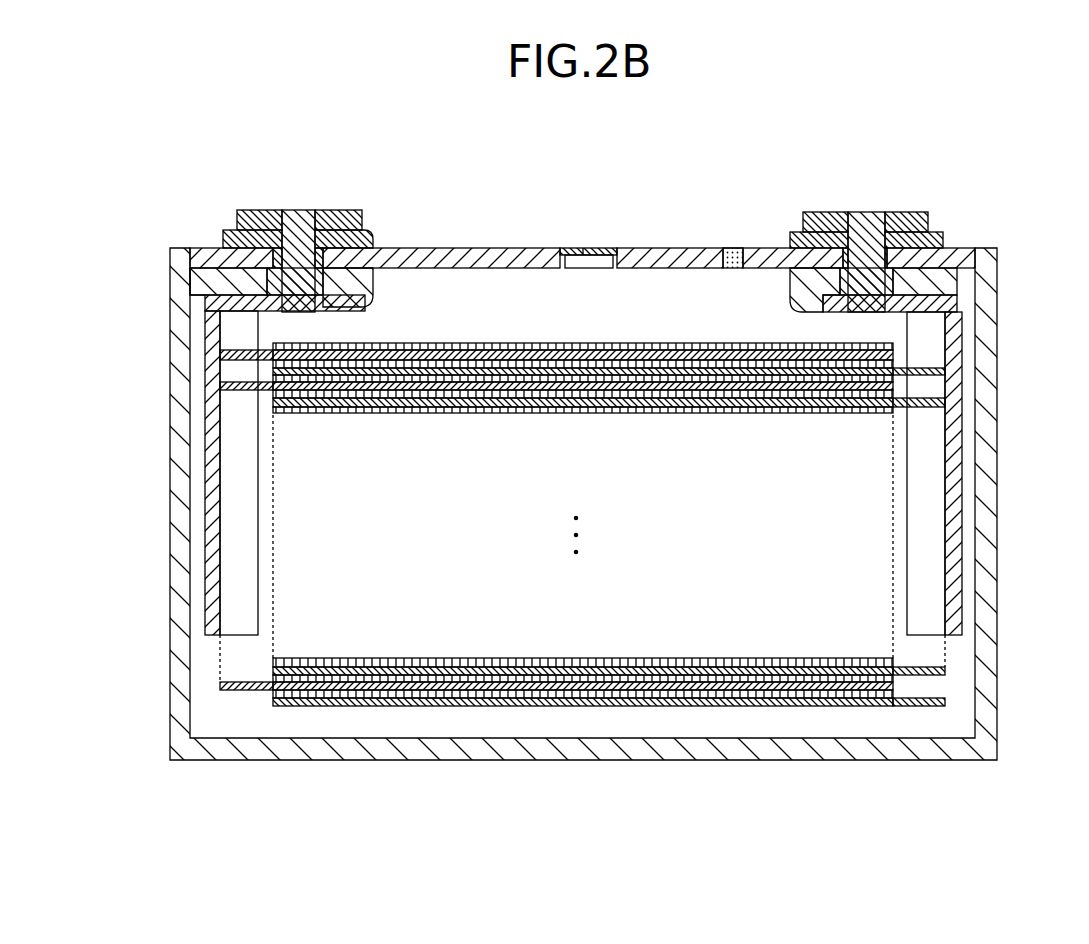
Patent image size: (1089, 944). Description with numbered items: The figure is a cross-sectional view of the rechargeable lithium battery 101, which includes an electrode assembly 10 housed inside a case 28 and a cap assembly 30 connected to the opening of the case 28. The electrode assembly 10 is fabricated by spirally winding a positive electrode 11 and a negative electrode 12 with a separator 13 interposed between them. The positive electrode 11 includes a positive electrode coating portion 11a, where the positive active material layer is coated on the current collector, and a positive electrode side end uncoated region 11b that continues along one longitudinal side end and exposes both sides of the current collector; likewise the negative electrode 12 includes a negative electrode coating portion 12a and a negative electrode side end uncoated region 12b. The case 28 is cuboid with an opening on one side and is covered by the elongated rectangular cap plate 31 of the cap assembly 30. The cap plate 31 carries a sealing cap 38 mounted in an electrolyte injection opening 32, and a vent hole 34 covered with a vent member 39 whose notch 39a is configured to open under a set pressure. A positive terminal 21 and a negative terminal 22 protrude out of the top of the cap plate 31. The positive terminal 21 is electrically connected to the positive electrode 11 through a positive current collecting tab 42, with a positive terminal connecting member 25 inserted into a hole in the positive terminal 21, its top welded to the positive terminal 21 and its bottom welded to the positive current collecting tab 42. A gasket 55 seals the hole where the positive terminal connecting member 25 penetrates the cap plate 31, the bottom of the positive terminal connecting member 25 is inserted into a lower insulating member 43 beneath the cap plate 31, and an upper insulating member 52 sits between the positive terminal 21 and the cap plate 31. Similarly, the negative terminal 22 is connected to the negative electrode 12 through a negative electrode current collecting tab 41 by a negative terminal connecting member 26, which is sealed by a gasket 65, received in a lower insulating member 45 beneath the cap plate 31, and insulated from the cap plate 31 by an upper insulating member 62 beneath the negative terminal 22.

The rechargeable lithium battery 101 is at (633, 157).
The case 28 is at (1000, 542).
The cap assembly 30 is at (582, 254).
The cap plate 31 is at (459, 247).
The vent member 39 is at (617, 250).
The notch 39a is at (583, 248).
The vent hole 34 is at (605, 270).
The electrolyte injection opening 32 is at (733, 268).
The sealing cap 38 is at (733, 248).
The gasket 55 is at (207, 252).
The lower insulating member 43 is at (205, 284).
The positive current collecting tab 42 is at (208, 414).
The upper insulating member 52 is at (370, 240).
The positive terminal 21 is at (258, 210).
The positive terminal connecting member 25 is at (300, 210).
The lower insulating member 45 is at (957, 284).
The negative electrode current collecting tab 41 is at (953, 438).
The gasket 65 is at (783, 250).
The upper insulating member 62 is at (940, 231).
The negative terminal 22 is at (897, 212).
The negative terminal connecting member 26 is at (862, 212).
The electrode assembly 10 is at (582, 599).
The separator 13 is at (567, 672).
The positive electrode 11 is at (556, 603).
The positive electrode coating portion 11a is at (365, 690).
The positive electrode side end uncoated region 11b is at (246, 581).
The negative electrode 12 is at (609, 612).
The negative electrode coating portion 12a is at (788, 708).
The negative electrode side end uncoated region 12b is at (919, 590).